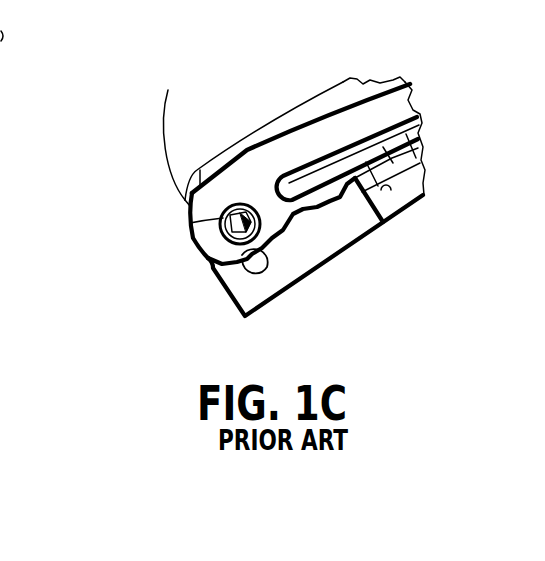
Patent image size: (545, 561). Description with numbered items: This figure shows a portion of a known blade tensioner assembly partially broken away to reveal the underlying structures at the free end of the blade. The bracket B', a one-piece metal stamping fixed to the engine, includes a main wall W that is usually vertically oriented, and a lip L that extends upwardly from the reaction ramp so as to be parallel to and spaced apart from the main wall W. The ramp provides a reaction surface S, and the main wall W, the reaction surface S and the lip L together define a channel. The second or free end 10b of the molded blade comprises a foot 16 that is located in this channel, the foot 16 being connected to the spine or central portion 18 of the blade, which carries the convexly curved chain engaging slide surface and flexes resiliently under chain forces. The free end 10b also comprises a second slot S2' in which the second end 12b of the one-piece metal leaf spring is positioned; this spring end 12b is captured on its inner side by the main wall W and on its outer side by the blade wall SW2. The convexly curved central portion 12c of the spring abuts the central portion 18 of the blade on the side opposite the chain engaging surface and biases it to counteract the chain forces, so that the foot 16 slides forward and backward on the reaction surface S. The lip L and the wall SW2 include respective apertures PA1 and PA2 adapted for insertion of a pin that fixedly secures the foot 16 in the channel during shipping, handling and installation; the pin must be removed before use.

The second or free end of the blade 10b is at (323, 103).
The second end of the spring 12b is at (322, 150).
The spine or central portion of the blade 18 is at (390, 105).
The convexly curved central portion of the spring 12c is at (420, 168).
The reaction surface S is at (388, 190).
The second slot S2' is at (332, 127).
The wall of the blade SW2 is at (272, 202).
The main wall W is at (182, 138).
The bracket B' is at (146, 142).
The aperture in the bracket lip PA1 is at (258, 273).
The aperture in wall SW2 PA2 is at (190, 227).
The foot 16 is at (227, 255).
The lip L is at (233, 287).